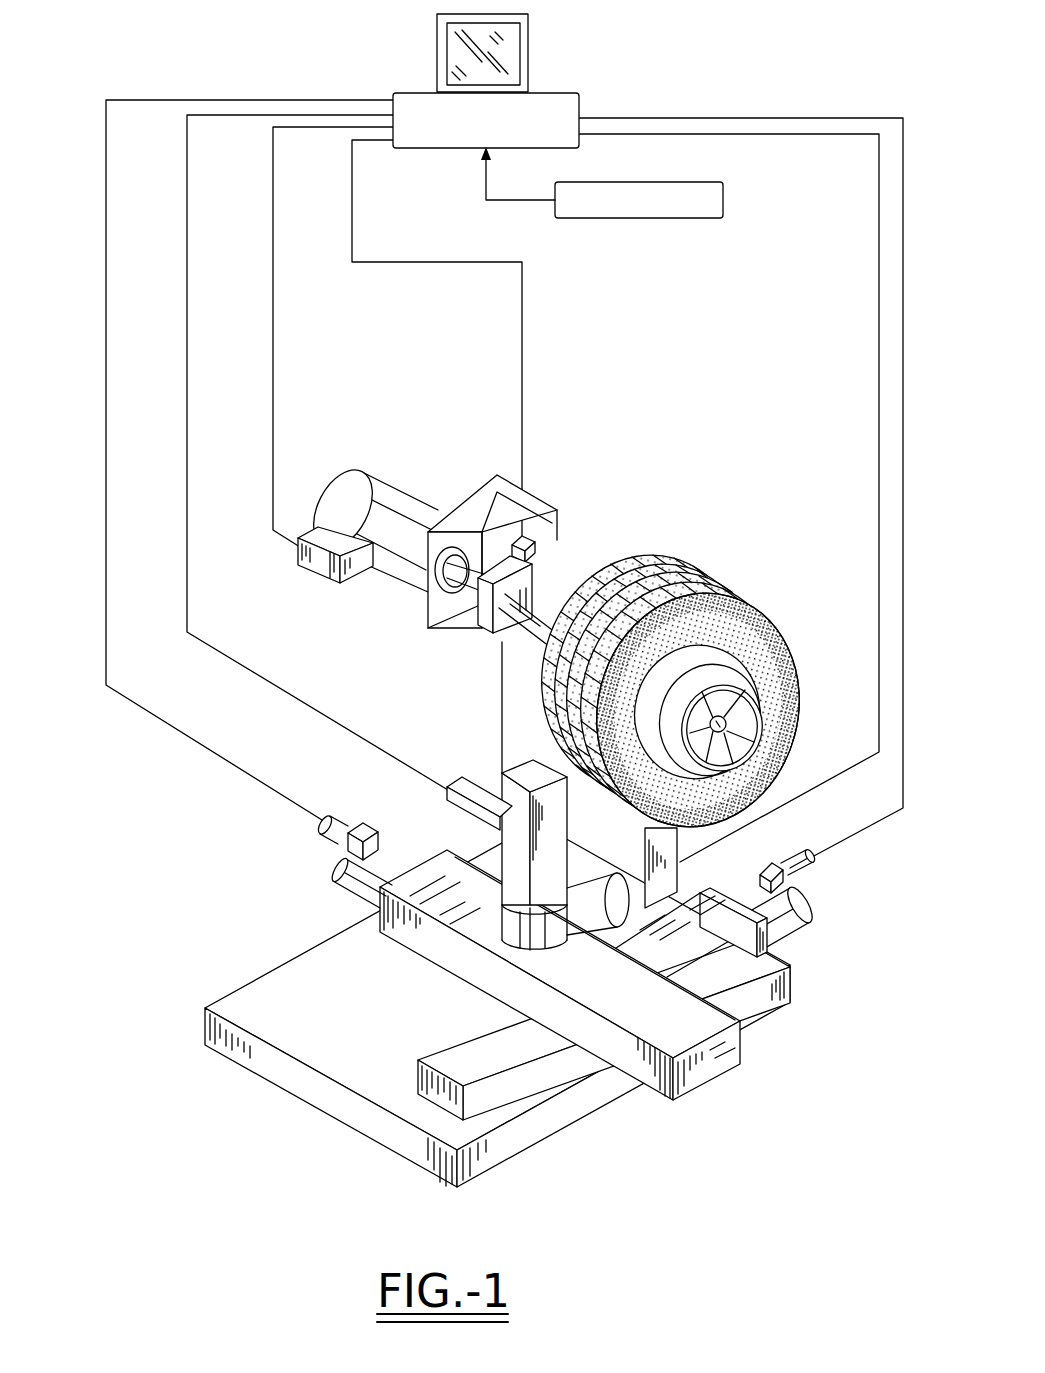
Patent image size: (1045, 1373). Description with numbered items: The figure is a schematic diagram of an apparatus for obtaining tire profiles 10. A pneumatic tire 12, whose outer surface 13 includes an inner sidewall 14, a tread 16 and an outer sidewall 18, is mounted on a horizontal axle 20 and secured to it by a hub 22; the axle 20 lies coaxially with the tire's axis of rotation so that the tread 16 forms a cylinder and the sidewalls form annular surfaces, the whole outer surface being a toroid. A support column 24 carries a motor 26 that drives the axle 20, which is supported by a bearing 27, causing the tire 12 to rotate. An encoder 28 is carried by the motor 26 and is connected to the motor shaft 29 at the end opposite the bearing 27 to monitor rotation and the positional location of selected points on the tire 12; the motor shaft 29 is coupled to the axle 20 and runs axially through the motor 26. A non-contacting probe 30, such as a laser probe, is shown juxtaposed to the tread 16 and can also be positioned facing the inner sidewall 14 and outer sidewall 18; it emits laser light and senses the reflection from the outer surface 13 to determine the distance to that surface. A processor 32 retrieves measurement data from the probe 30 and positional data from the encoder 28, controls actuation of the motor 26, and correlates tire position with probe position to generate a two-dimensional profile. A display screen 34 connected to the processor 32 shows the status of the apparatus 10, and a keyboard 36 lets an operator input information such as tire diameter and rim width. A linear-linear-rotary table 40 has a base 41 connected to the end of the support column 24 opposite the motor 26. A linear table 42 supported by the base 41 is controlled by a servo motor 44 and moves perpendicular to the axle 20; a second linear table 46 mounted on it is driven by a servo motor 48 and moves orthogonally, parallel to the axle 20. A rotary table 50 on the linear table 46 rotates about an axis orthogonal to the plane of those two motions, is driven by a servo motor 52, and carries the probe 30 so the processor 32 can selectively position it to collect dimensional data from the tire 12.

The apparatus for obtaining tire profiles 10 is at (205, 1153).
The pneumatic tire 12 is at (691, 640).
The outer surface 13 is at (742, 583).
The inner sidewall 14 is at (618, 578).
The tread 16 is at (720, 583).
The outer sidewall 18 is at (780, 645).
The axle 20 is at (532, 622).
The hub 22 is at (732, 733).
The support column 24 is at (500, 708).
The motor 26 is at (388, 474).
The bearing 27 is at (483, 625).
The encoder 28 is at (442, 500).
The motor shaft 29 is at (458, 578).
The non-contacting probe 30 is at (482, 778).
The processor 32 is at (436, 150).
The display screen 34 is at (440, 33).
The keyboard 36 is at (670, 218).
The linear-linear-rotary table 40 is at (180, 1006).
The base 41 is at (262, 977).
The linear table 42 is at (763, 950).
The servo motor 44 is at (805, 900).
The linear table 46 is at (383, 912).
The servo motor 48 is at (335, 860).
The rotary table 50 is at (515, 940).
The servo motor 52 is at (593, 917).